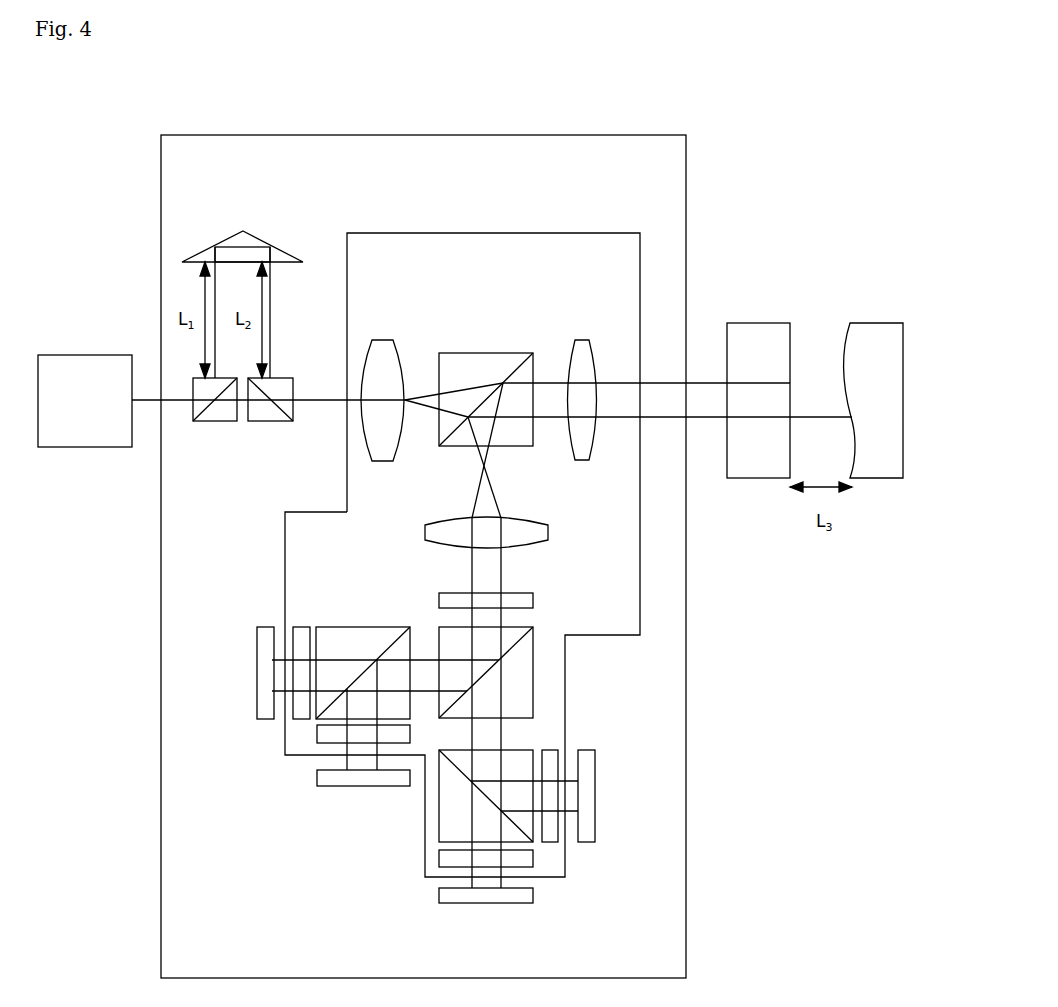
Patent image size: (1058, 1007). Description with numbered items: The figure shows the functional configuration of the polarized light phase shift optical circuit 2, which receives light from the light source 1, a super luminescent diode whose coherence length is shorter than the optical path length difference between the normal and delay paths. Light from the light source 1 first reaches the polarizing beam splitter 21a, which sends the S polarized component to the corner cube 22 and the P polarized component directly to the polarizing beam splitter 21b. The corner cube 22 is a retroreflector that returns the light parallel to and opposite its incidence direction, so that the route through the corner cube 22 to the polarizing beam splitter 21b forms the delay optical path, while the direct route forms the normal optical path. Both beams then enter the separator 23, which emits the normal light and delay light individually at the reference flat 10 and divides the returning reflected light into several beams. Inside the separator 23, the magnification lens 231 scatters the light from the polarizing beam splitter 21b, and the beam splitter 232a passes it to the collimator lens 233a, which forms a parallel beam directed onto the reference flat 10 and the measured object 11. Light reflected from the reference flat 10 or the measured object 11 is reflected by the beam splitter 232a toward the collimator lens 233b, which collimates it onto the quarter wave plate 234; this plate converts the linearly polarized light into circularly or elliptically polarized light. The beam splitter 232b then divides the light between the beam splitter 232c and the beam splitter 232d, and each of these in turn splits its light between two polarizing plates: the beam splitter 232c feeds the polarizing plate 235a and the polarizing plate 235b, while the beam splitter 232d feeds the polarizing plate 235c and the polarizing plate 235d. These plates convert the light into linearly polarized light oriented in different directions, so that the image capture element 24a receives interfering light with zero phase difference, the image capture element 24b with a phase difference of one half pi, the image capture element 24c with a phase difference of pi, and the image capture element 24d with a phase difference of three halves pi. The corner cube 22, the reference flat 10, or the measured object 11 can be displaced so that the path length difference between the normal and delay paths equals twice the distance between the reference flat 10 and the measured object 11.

The light source 1 is at (106, 355).
The polarized light phase shift optical circuit 2 is at (658, 134).
The reference flat 10 is at (762, 323).
The measured object 11 is at (874, 323).
The polarizing beam splitter 21a is at (222, 423).
The polarizing beam splitter 21b is at (282, 377).
The corner cube 22 is at (288, 249).
The separator 23 is at (597, 233).
The image capture element 24a is at (260, 627).
The image capture element 24b is at (330, 787).
The image capture element 24c is at (439, 894).
The image capture element 24d is at (584, 843).
The magnification lens 231 is at (385, 340).
The beam splitter 232a is at (500, 353).
The beam splitter 232b is at (532, 627).
The beam splitter 232c is at (380, 627).
The beam splitter 232d is at (527, 745).
The collimator lens 233a is at (583, 340).
The collimator lens 233b is at (523, 518).
The quarter wave plate 234 is at (521, 593).
The polarizing plate 235a is at (303, 627).
The polarizing plate 235b is at (317, 735).
The polarizing plate 235c is at (439, 860).
The polarizing plate 235d is at (548, 747).